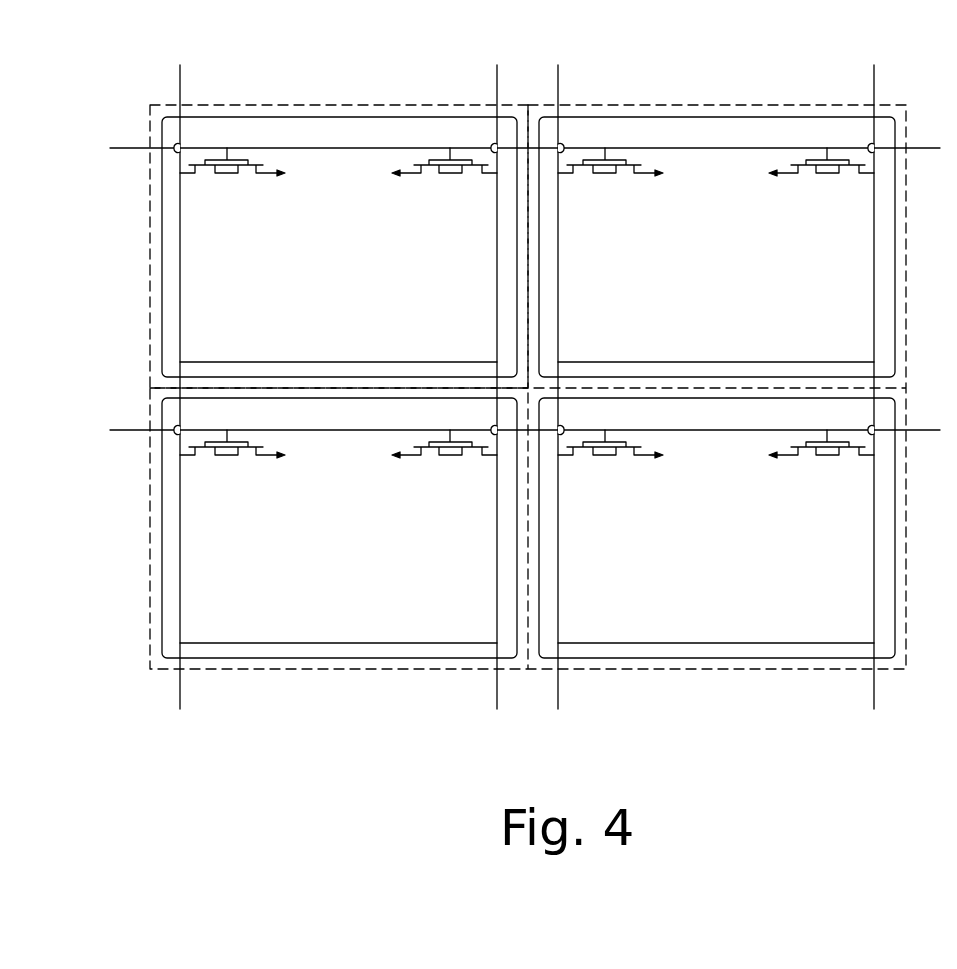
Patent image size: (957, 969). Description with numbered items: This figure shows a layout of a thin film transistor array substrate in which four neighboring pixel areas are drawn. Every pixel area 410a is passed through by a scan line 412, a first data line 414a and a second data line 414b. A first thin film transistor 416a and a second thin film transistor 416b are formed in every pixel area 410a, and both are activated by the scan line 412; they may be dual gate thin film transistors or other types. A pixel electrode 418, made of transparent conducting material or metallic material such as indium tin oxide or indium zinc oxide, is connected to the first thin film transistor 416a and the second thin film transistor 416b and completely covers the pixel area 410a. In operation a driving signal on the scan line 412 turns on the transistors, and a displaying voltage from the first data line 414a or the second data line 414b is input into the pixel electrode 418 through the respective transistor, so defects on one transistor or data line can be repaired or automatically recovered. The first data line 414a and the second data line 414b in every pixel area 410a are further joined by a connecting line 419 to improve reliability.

The pixel area 410a is at (357, 105).
The scan line 412 is at (133, 150).
The first data line 414a is at (180, 95).
The second data line 414b is at (497, 87).
The first thin film transistor 416a is at (238, 160).
The second thin film transistor 416b is at (440, 160).
The pixel electrode 418 is at (162, 285).
The connecting line 419 is at (233, 362).